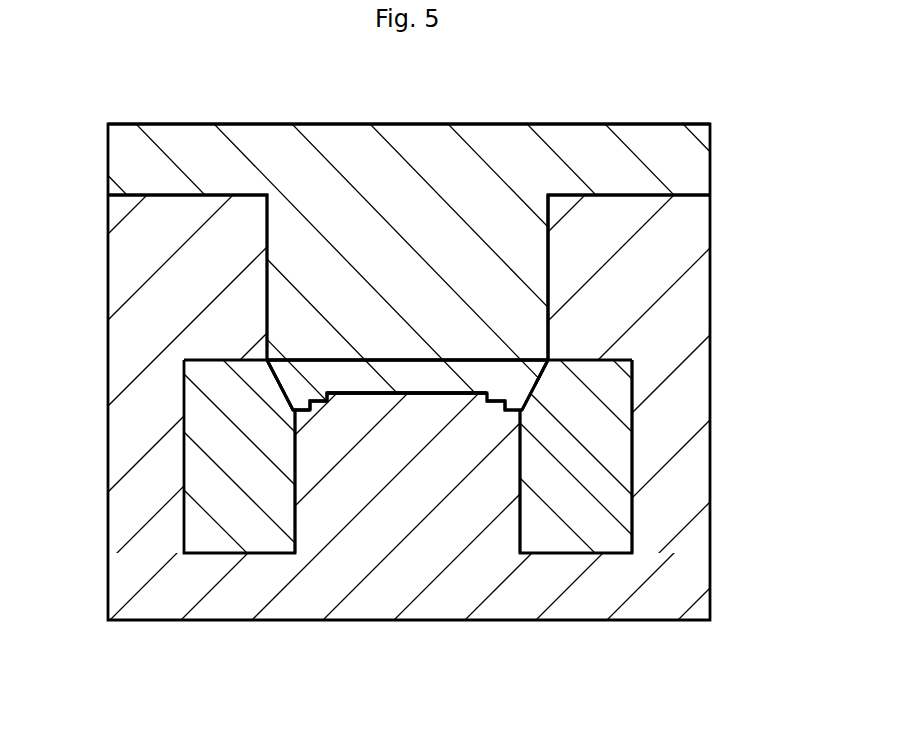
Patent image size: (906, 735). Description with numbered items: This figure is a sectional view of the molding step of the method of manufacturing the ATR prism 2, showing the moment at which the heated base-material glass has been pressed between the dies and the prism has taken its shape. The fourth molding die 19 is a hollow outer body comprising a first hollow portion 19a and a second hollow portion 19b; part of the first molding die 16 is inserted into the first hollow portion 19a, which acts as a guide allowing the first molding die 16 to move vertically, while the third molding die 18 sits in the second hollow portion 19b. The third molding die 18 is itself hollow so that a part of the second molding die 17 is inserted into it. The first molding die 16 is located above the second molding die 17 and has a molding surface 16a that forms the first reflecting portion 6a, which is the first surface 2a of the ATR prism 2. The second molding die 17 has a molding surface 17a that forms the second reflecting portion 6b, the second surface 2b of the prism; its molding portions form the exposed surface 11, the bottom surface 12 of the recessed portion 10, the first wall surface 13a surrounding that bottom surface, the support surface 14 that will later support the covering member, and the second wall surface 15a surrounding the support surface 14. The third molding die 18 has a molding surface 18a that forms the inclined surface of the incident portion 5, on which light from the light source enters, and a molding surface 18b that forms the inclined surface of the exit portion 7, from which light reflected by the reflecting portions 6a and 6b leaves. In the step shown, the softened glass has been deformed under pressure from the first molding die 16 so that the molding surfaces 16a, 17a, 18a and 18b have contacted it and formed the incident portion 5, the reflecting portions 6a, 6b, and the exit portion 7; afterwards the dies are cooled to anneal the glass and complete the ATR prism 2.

The ATR prism 2 is at (477, 366).
The first surface 2a is at (369, 392).
The second surface 2b is at (300, 411).
The incident portion 5 is at (274, 378).
The first reflecting portion 6a is at (340, 356).
The second reflecting portion 6b is at (432, 400).
The exit portion 7 is at (547, 375).
The recessed portion 10 is at (362, 400).
The exposed surface 11 is at (508, 413).
The bottom surface 12 is at (466, 394).
The first wall surface 13a is at (348, 404).
The support surface 14 is at (500, 411).
The second wall surface 15a is at (328, 405).
The first molding die 16 is at (586, 143).
The molding surface 16a is at (419, 376).
The second molding die 17 is at (361, 595).
The molding surface 17a is at (374, 388).
The third molding die 18 is at (600, 517).
The molding surface 18a is at (294, 377).
The molding surface 18b is at (518, 379).
The fourth molding die 19 is at (714, 302).
The first hollow portion 19a is at (550, 262).
The second hollow portion 19b is at (633, 453).